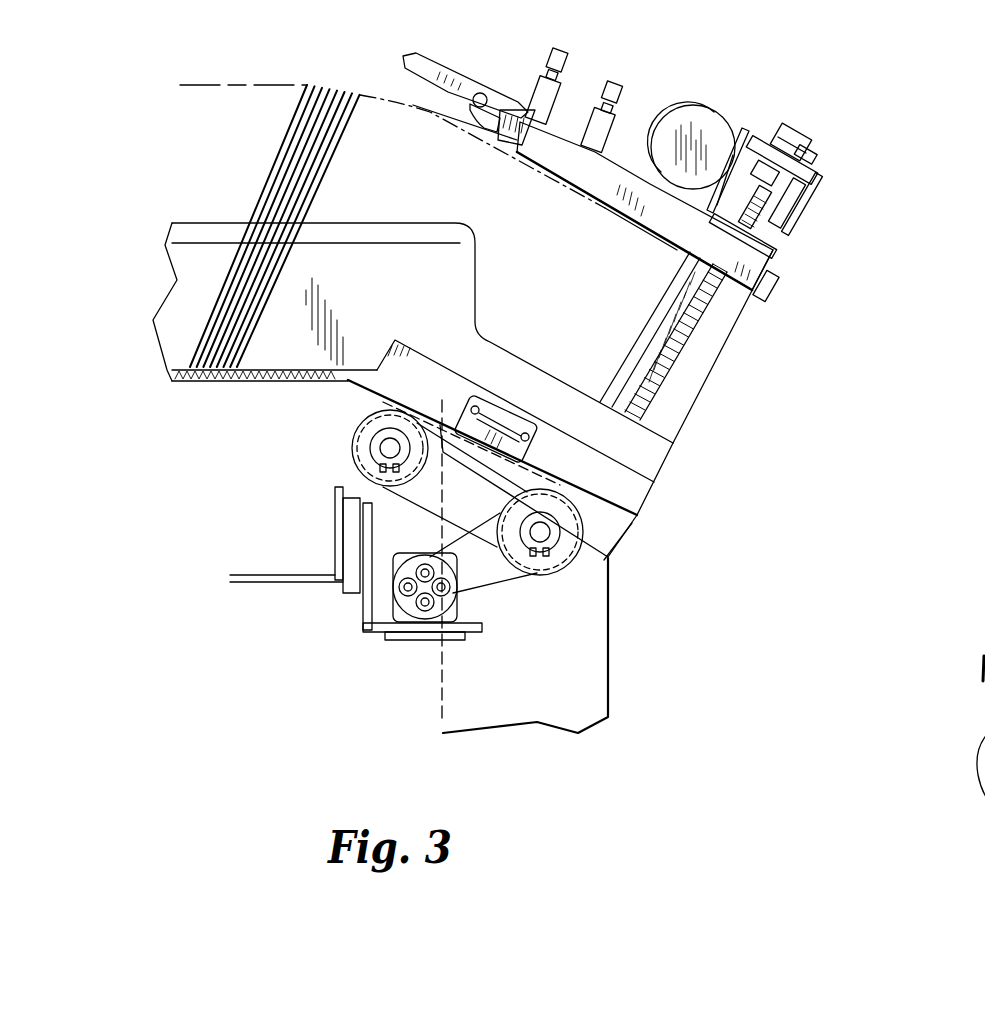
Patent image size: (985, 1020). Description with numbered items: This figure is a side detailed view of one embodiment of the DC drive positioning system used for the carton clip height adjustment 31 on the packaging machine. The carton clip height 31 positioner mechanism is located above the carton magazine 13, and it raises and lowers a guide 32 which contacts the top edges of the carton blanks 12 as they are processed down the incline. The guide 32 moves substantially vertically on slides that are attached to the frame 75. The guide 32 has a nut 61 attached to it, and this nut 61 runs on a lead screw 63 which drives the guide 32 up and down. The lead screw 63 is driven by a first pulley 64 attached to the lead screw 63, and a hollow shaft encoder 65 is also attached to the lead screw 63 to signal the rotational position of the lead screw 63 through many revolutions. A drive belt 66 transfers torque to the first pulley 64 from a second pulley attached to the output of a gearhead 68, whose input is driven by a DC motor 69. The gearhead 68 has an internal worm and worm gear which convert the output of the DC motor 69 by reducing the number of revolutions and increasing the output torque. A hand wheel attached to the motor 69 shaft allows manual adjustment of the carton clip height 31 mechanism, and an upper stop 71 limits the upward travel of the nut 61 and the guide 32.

The carton blanks 12 is at (262, 190).
The carton magazine 13 is at (272, 394).
The carton clip height adjustment 31 is at (890, 163).
The guide 32 is at (623, 218).
The nut 61 is at (745, 304).
The lead screw 63 is at (690, 355).
The first pulley 64 is at (800, 130).
The hollow shaft encoder 65 is at (783, 212).
The drive belt 66 is at (815, 160).
The gearhead 68 is at (742, 126).
The DC motor 69 is at (690, 105).
The upper stop 71 is at (782, 240).
The frame 75 is at (562, 641).